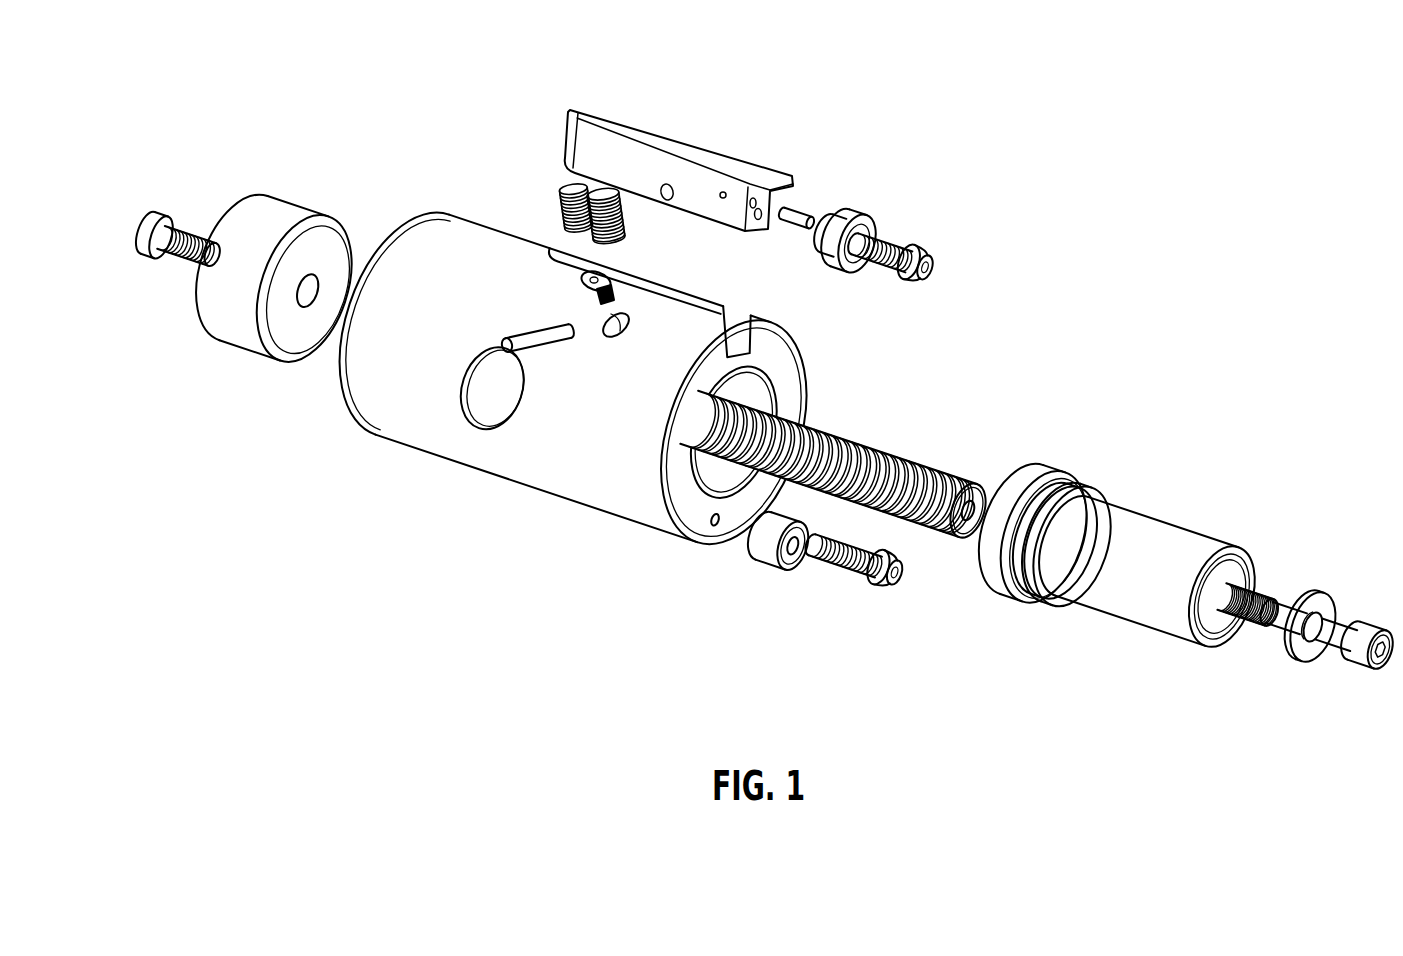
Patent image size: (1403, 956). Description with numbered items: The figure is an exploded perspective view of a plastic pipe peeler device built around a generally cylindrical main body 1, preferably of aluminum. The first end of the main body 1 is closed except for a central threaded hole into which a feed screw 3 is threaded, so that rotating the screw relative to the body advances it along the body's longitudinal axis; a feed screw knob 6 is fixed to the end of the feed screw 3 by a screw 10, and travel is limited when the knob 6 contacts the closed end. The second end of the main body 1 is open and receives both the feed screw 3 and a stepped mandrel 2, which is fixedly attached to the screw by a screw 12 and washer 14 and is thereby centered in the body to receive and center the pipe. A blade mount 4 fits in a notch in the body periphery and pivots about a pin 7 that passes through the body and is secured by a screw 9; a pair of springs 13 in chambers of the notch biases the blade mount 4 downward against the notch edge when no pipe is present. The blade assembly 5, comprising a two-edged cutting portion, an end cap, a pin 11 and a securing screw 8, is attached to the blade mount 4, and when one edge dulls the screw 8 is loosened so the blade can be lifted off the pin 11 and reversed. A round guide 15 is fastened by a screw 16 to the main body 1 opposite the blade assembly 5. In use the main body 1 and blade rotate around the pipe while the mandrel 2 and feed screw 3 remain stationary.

The main body 1 is at (418, 218).
The mandrel 2 is at (1145, 520).
The feed screw 3 is at (882, 450).
The blade mount 4 is at (682, 135).
The blade assembly 5 is at (848, 215).
The feed screw knob 6 is at (258, 205).
The pin 7 is at (517, 337).
The securing screw 8 is at (920, 247).
The screw 9 is at (610, 271).
The screw 10 is at (145, 232).
The pin 11 is at (797, 212).
The screw 12 is at (1337, 612).
The springs 13 is at (566, 198).
The washer 14 is at (1310, 592).
The round guide 15 is at (760, 565).
The screw 16 is at (845, 570).